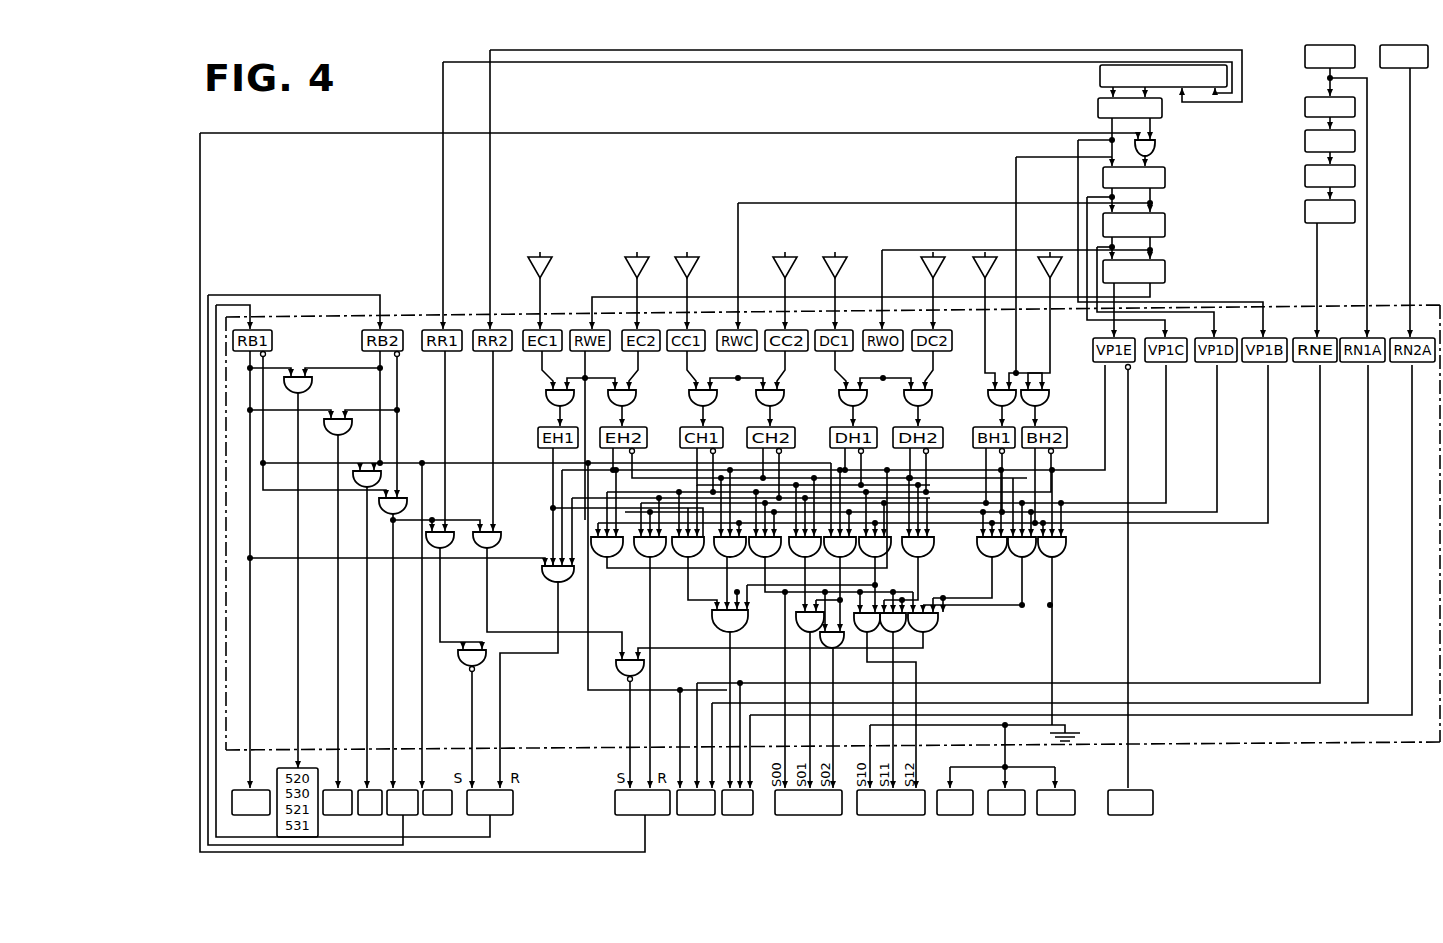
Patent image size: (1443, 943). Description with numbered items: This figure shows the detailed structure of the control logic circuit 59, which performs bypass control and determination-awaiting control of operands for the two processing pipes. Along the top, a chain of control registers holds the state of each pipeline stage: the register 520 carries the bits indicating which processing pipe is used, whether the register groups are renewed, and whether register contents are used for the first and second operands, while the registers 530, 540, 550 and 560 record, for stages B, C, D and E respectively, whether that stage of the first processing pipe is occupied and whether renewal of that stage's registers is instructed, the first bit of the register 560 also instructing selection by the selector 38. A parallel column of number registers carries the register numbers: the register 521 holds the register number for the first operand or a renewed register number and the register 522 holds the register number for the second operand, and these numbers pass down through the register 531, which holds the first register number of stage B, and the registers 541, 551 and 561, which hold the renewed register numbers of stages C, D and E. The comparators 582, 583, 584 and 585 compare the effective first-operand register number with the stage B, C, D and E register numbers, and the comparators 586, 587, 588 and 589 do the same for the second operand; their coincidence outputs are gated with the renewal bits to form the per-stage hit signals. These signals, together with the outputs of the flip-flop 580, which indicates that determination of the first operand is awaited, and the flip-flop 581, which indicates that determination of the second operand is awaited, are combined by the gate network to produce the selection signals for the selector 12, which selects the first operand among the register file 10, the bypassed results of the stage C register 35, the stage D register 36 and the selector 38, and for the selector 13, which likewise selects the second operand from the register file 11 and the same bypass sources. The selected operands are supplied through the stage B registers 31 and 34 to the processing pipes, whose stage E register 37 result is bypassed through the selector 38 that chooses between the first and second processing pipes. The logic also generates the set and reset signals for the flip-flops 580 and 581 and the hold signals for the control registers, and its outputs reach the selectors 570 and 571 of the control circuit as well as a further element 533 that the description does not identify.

The register 520 is at (1163, 76).
The register 530 is at (1130, 108).
The register 540 is at (1134, 177).
The register 550 is at (1134, 225).
The register 560 is at (1134, 271).
The register 521 is at (1330, 56).
The register 522 is at (1404, 56).
The register 531 is at (1330, 107).
The register 541 is at (1330, 141).
The register 551 is at (1330, 176).
The register 561 is at (1330, 211).
The comparator 585 is at (540, 256).
The comparator 589 is at (637, 256).
The comparator 583 is at (687, 256).
The comparator 587 is at (785, 256).
The comparator 584 is at (835, 256).
The comparator 588 is at (929, 262).
The comparator 582 is at (982, 262).
The comparator 586 is at (1048, 254).
The selector 570 is at (251, 802).
The register 34 is at (337, 802).
The register 31 is at (370, 802).
The output register 533 is at (402, 802).
The selector 571 is at (437, 802).
The flip-flop 580 is at (490, 802).
The flip-flop 581 is at (642, 802).
The register file 10 is at (696, 802).
The register file 11 is at (737, 802).
The selector 12 is at (808, 802).
The selector 13 is at (891, 802).
The register 35 is at (955, 802).
The register 36 is at (1006, 802).
The register 37 is at (1056, 802).
The selector 38 is at (1130, 802).
The control logic circuit 59 is at (1270, 748).